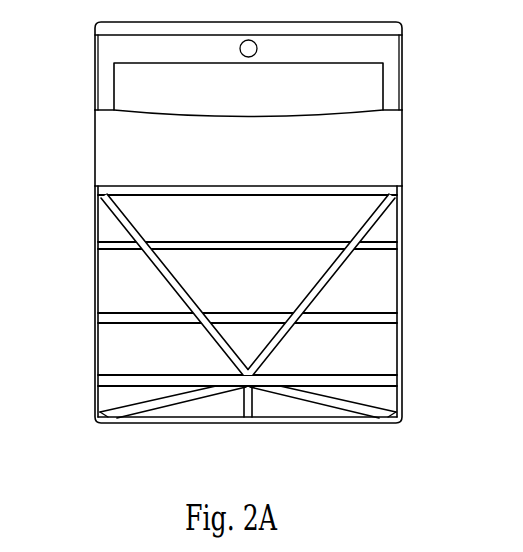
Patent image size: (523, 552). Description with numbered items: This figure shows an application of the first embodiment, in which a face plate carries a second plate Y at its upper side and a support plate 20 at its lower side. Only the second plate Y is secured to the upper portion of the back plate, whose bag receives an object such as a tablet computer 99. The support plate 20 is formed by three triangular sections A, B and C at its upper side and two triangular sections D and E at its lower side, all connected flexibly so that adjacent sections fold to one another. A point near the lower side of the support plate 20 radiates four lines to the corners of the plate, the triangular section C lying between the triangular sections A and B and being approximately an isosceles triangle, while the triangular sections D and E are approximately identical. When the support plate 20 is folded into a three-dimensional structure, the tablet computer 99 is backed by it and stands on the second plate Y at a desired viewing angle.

The tablet computer 99 is at (363, 49).
The second plate Y is at (390, 139).
The support plate 20 is at (237, 324).
The triangular section A is at (390, 252).
The triangular section B is at (107, 263).
The triangular section C is at (367, 210).
The triangular section D is at (305, 408).
The triangular section E is at (187, 408).